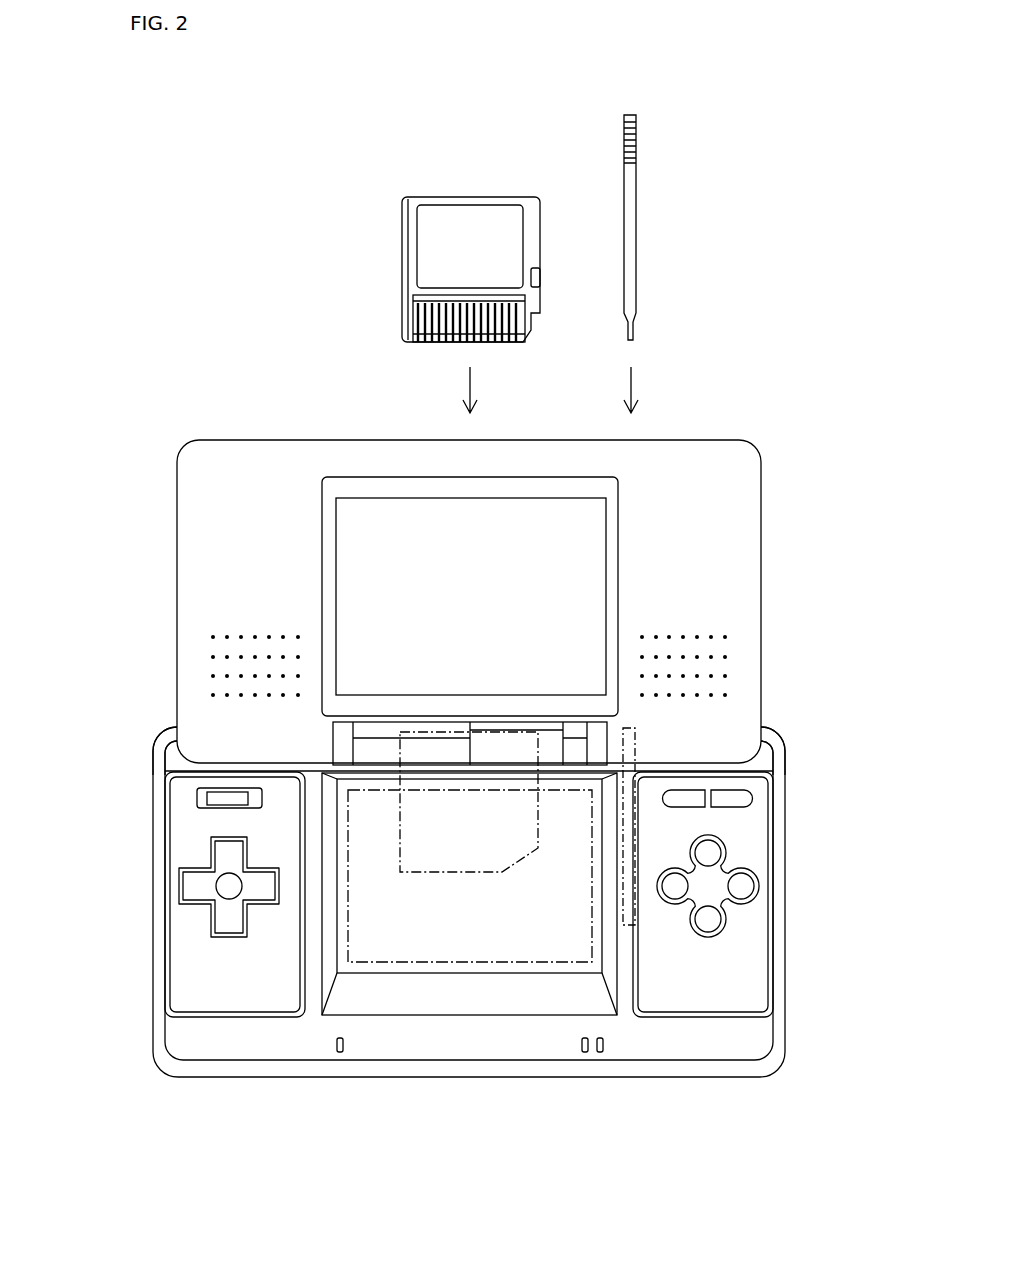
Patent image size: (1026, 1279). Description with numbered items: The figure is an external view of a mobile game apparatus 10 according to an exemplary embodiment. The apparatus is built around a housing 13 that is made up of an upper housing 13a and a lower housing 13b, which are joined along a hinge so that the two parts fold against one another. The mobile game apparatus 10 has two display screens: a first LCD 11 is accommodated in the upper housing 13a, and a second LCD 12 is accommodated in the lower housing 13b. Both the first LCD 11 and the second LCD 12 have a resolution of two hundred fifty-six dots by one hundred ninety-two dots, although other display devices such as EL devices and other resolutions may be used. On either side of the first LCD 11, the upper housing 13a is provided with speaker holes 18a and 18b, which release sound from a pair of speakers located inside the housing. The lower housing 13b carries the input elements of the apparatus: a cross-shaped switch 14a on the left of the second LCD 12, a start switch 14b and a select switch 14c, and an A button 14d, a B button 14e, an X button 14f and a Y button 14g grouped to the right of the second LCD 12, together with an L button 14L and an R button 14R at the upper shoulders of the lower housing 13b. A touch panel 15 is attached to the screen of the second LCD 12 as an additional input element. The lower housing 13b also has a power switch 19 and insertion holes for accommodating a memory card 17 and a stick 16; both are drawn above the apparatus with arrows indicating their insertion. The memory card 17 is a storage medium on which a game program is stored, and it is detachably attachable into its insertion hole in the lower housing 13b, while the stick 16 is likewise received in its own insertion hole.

The mobile game apparatus 10 is at (176, 250).
The first LCD 11 is at (356, 530).
The second LCD 12 is at (510, 973).
The housing 13 is at (740, 440).
The upper housing 13a is at (732, 577).
The lower housing 13b is at (175, 978).
The cross-shaped switch 14a is at (179, 877).
The start switch 14b is at (752, 806).
The select switch 14c is at (697, 790).
The A button 14d is at (757, 887).
The B button 14e is at (725, 919).
The X button 14f is at (725, 853).
The Y button 14g is at (675, 900).
The L button 14L is at (150, 739).
The R button 14R is at (778, 730).
The touch panel 15 is at (378, 965).
The stick 16 is at (637, 163).
The memory card 17 is at (507, 197).
The speaker hole 18a is at (213, 672).
The speaker hole 18b is at (725, 637).
The power switch 19 is at (198, 793).